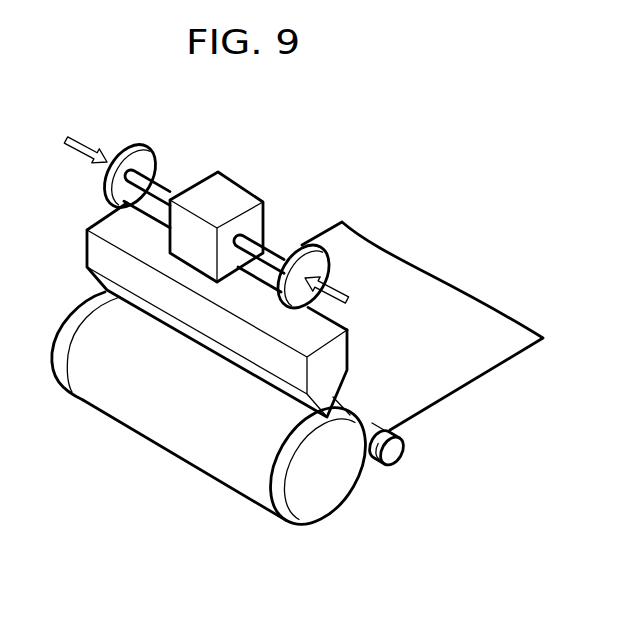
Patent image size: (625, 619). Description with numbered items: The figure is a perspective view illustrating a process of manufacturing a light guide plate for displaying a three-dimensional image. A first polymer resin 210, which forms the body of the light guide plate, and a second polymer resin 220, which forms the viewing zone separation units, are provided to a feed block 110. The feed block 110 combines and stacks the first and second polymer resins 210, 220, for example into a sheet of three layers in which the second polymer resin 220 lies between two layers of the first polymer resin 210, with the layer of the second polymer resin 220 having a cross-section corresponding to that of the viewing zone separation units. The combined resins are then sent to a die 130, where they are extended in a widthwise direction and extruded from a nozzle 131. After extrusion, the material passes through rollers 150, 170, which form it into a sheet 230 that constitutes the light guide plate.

The feed block 110 is at (240, 186).
The die 130 is at (76, 248).
The nozzle 131 is at (237, 477).
The roller 150 is at (335, 503).
The roller 170 is at (392, 455).
The first polymer resin 210 is at (83, 143).
The second polymer resin 220 is at (334, 291).
The sheet 230 is at (463, 377).